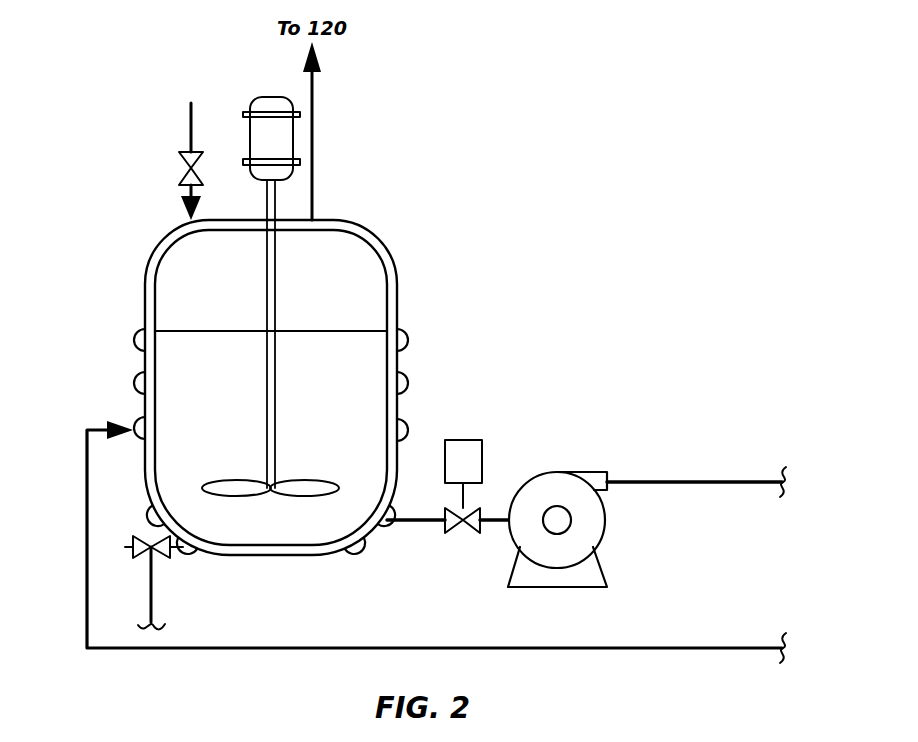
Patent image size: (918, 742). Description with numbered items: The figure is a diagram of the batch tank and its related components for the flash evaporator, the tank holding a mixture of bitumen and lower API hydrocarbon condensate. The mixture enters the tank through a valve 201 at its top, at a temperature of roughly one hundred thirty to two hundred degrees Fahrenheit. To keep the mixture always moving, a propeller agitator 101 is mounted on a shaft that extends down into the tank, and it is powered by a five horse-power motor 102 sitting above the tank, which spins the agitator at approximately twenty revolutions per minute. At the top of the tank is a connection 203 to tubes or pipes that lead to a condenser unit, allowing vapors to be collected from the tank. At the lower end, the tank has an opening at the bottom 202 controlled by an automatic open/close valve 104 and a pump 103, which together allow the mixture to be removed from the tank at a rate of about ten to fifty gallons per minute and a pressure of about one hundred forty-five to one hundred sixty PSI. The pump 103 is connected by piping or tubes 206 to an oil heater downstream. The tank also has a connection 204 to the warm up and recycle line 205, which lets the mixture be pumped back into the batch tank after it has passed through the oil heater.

The propeller agitator 101 is at (310, 485).
The motor 102 is at (262, 108).
The pump 103 is at (463, 450).
The automatic open/close valve 104 is at (558, 487).
The valve 201 is at (185, 180).
The opening at the bottom 202 is at (387, 520).
The connection 203 is at (315, 218).
The connection 204 is at (186, 548).
The warm up and recycle line 205 is at (151, 590).
The piping or tubes 206 is at (668, 482).